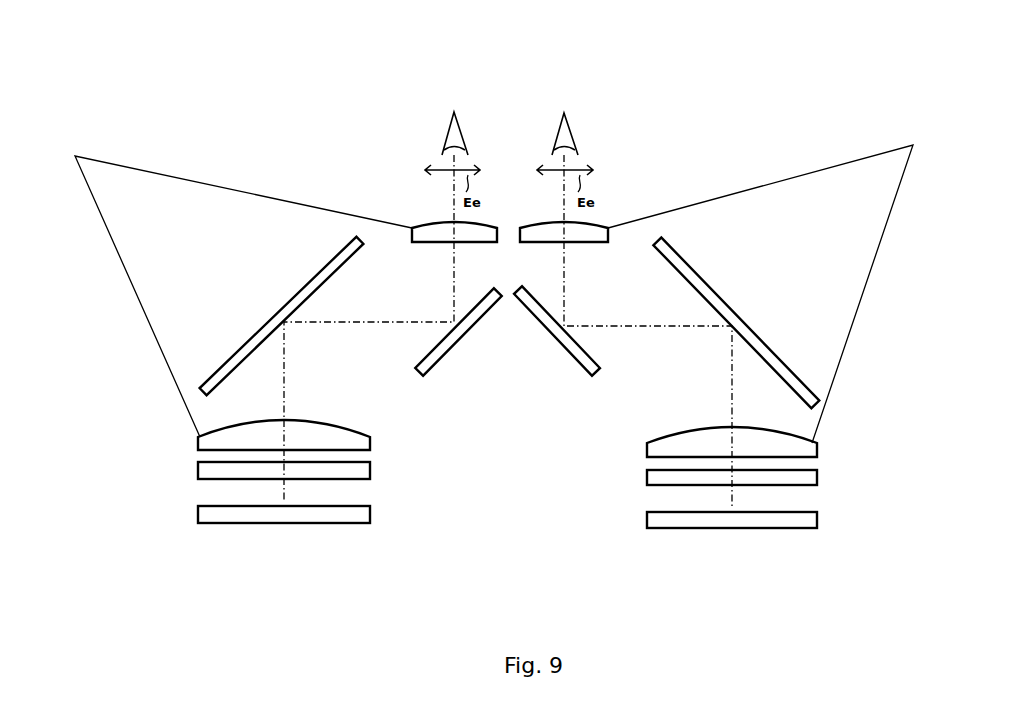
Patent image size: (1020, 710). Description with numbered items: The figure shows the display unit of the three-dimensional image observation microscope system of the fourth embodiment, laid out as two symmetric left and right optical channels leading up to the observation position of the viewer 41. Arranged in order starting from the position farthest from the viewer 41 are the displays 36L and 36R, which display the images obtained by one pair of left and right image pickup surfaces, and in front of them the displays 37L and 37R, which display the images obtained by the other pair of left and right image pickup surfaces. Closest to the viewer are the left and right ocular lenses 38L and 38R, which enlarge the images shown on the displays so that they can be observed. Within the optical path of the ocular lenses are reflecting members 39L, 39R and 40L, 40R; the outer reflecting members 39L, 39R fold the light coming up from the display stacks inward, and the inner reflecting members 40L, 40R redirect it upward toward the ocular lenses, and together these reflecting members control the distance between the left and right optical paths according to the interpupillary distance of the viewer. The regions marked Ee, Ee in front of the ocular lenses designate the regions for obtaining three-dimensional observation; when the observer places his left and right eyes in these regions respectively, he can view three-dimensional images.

The viewer 41 is at (553, 125).
The left ocular lens 38L is at (230, 287).
The right ocular lens 38R is at (767, 284).
The reflecting member 39L is at (260, 332).
The reflecting member 39R is at (725, 298).
The reflecting member 40L is at (443, 352).
The reflecting member 40R is at (572, 348).
The display 37L is at (208, 470).
The display 37R is at (803, 480).
The display 36L is at (237, 515).
The display 36R is at (718, 517).